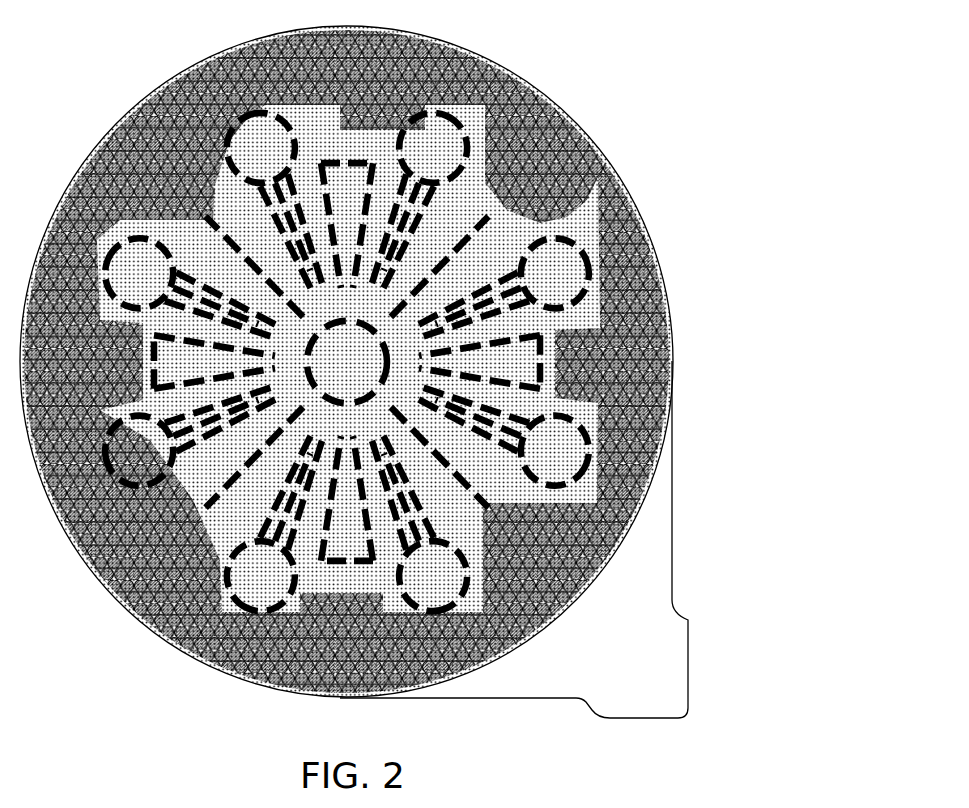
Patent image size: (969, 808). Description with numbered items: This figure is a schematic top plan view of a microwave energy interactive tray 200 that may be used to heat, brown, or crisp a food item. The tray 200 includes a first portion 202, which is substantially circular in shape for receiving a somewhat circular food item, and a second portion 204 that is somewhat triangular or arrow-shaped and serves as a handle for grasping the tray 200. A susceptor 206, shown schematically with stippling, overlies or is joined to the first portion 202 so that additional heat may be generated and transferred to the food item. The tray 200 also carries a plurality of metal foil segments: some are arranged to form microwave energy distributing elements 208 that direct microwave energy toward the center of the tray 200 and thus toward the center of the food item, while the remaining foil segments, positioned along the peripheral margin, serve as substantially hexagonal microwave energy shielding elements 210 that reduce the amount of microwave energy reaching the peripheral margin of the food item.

The tray 200 is at (633, 85).
The first portion 202 is at (680, 333).
The second portion 204 is at (654, 671).
The susceptor 206 is at (664, 284).
The microwave energy distributing elements 208 is at (570, 230).
The microwave energy shielding elements 210 is at (637, 230).